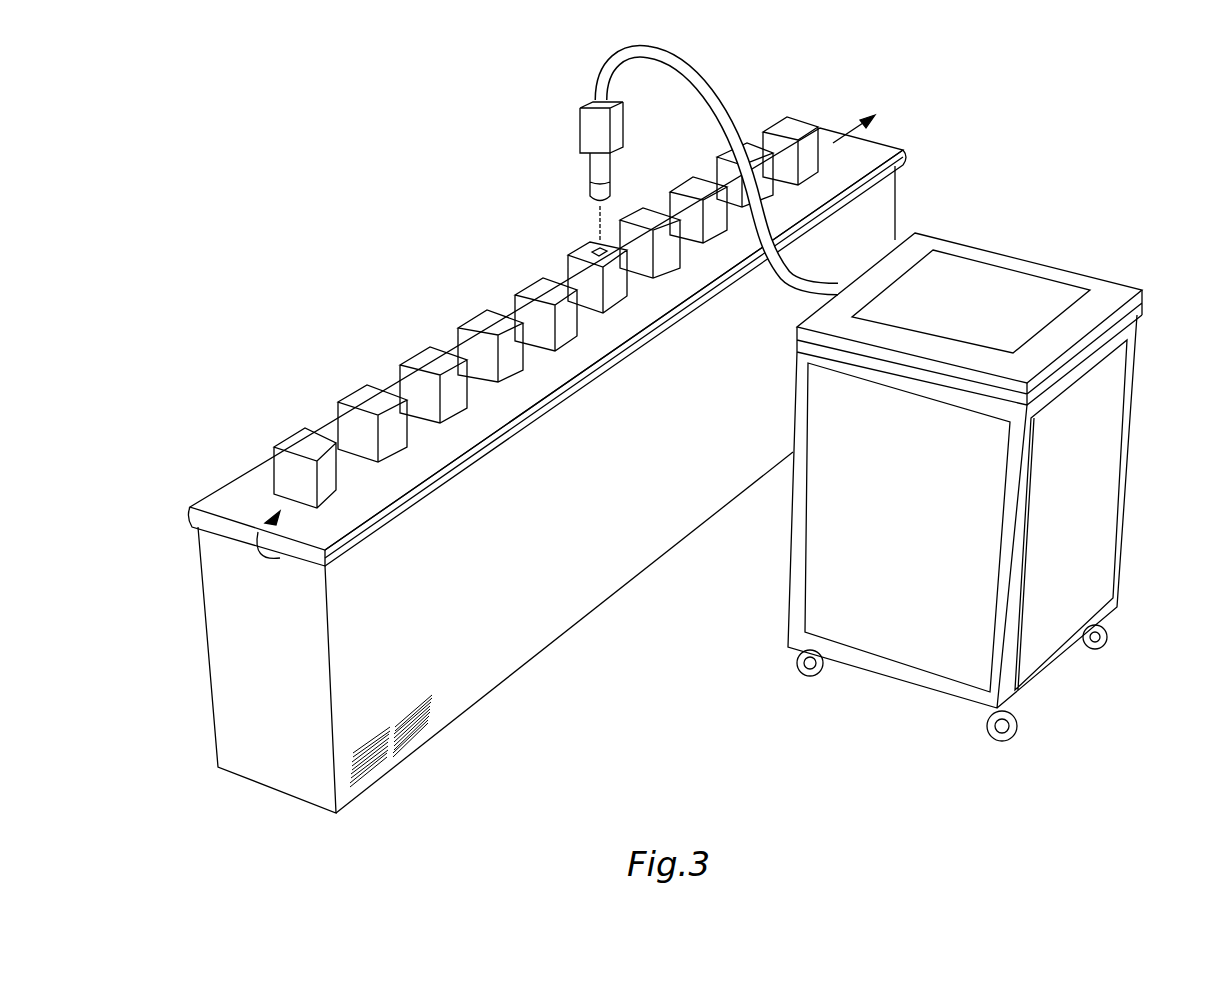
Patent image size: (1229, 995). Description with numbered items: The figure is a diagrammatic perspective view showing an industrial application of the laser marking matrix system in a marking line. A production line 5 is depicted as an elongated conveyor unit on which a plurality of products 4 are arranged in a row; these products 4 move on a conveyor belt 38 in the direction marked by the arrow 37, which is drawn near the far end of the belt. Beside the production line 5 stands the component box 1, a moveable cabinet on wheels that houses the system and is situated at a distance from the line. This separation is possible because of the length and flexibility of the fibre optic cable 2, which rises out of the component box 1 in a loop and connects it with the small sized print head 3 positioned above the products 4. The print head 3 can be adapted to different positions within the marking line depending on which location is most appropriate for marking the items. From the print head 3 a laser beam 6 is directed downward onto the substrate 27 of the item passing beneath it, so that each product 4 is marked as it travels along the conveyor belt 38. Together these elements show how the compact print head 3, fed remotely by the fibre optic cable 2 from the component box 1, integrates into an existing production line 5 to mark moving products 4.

The component box 1 is at (1078, 516).
The fibre optic cable 2 is at (707, 90).
The print head 3 is at (582, 104).
The products 4 is at (523, 312).
The production line 5 is at (248, 653).
The laser beam 6 is at (598, 215).
The substrate 27 is at (597, 252).
The arrow 37 is at (853, 130).
The conveyor belt 38 is at (873, 150).